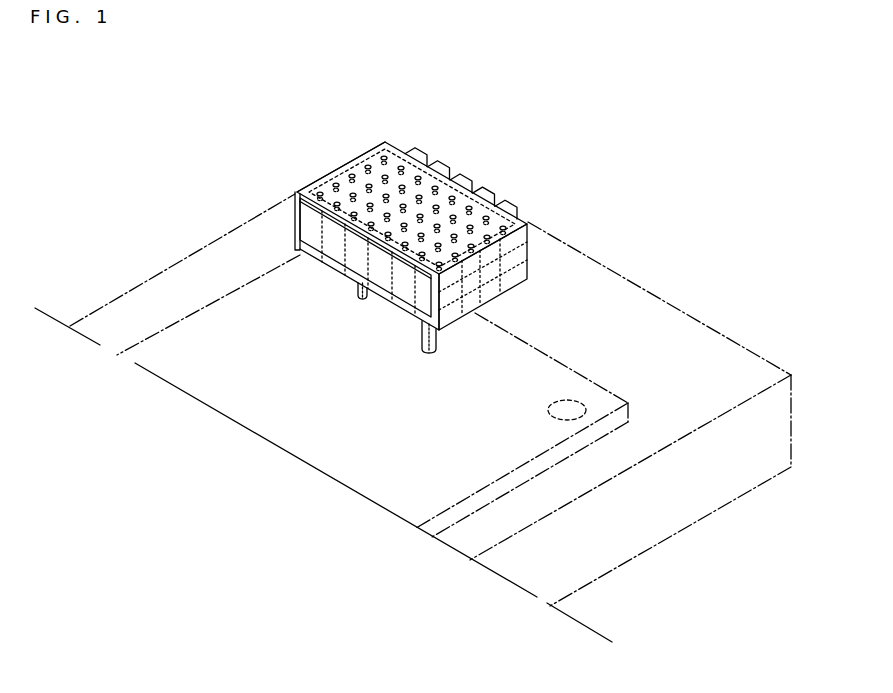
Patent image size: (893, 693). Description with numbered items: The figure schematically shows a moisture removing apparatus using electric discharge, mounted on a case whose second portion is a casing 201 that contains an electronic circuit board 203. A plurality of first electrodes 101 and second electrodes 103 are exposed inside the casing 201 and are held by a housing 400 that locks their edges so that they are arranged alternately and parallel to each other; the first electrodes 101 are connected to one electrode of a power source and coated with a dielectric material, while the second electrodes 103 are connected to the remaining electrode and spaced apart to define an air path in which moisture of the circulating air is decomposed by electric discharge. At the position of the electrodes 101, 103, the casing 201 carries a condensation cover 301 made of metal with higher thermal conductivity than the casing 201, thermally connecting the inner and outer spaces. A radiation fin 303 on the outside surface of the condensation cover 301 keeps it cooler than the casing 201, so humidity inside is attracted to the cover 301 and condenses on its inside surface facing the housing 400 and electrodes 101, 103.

The first electrode 101 is at (407, 180).
The second electrode 103 is at (372, 165).
The casing 201 is at (720, 358).
The electronic circuit board 203 is at (543, 360).
The condensation cover 301 is at (323, 173).
The radiation fin 303 is at (467, 176).
The housing 400 is at (302, 260).